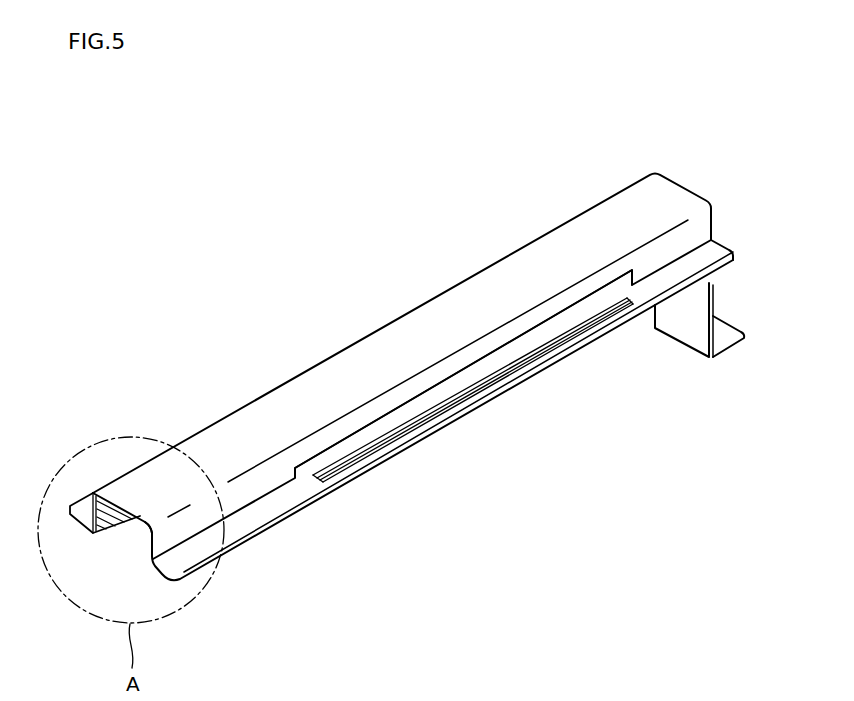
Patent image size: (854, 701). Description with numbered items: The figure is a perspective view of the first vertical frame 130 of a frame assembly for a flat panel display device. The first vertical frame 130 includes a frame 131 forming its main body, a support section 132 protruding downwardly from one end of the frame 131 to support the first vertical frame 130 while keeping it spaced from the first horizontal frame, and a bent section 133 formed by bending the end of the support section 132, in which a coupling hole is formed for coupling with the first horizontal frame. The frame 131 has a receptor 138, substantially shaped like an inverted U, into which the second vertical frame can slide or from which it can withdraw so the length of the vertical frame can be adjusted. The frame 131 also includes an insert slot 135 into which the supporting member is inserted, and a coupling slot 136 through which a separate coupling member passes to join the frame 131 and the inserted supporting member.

The first vertical frame 130 is at (507, 188).
The frame 131 is at (340, 367).
The support section 132 is at (686, 327).
The bent section 133 is at (722, 331).
The insert slot 135 is at (479, 368).
The coupling slot 136 is at (556, 344).
The receptor 138 is at (134, 537).